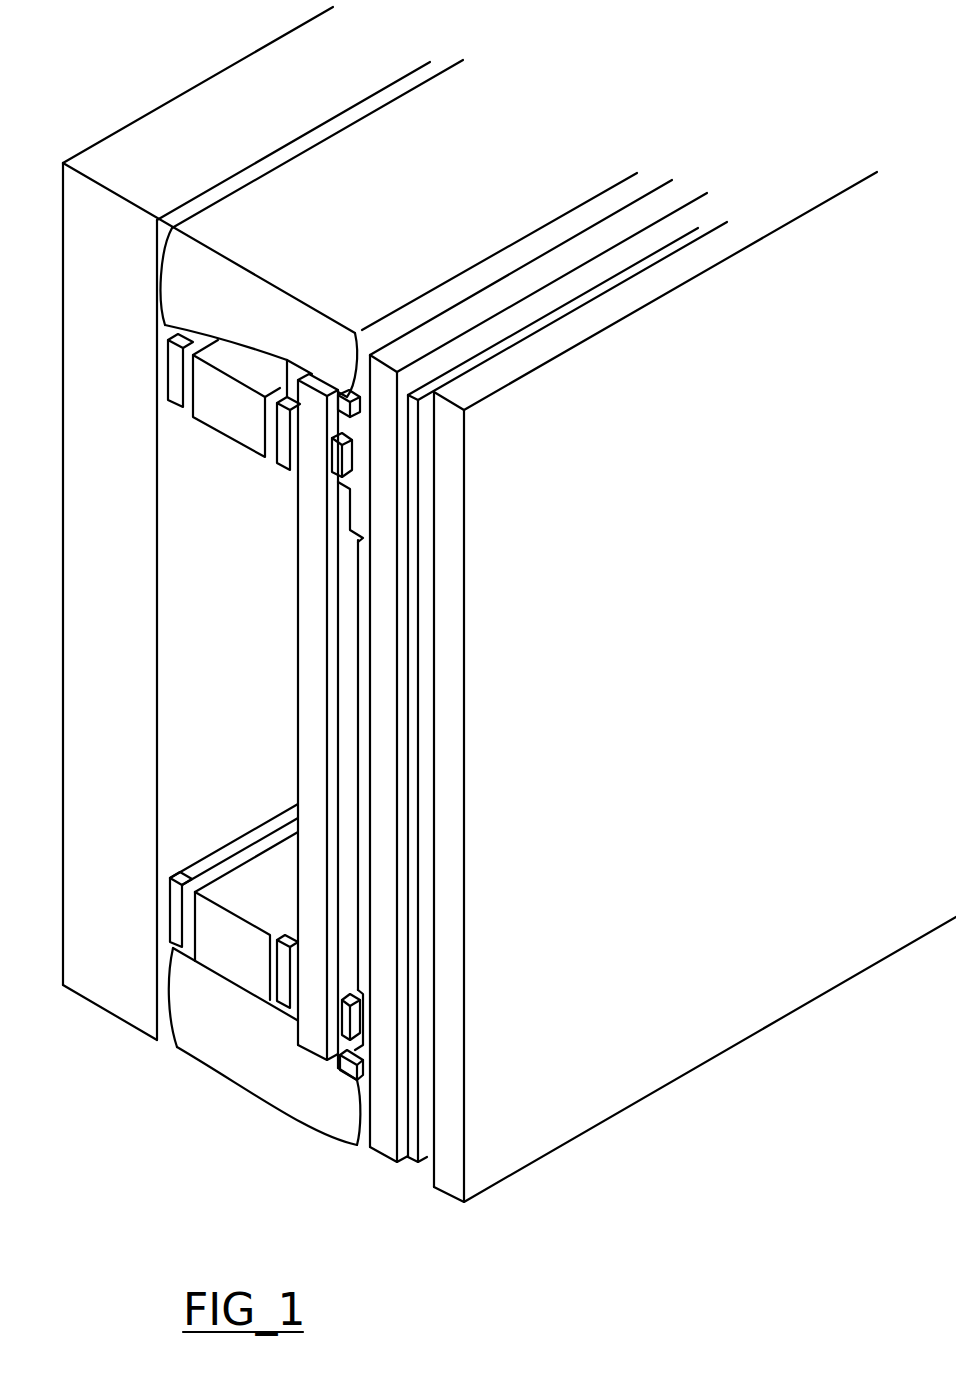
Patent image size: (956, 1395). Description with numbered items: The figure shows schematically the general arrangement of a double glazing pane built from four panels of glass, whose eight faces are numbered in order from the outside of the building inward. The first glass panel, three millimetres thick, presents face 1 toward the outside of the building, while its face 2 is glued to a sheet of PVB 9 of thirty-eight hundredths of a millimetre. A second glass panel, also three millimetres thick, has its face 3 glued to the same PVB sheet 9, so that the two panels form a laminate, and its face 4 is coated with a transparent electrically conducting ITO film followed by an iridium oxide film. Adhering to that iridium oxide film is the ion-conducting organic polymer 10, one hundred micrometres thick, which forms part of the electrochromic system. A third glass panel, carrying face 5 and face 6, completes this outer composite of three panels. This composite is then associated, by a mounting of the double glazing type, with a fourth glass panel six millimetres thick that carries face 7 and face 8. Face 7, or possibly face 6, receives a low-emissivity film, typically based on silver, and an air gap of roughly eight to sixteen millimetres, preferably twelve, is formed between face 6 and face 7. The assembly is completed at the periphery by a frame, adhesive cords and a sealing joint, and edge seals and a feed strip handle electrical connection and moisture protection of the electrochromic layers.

The face 1 is at (467, 512).
The face 2 is at (437, 528).
The face 3 is at (400, 548).
The face 4 is at (373, 567).
The face 5 is at (330, 588).
The face 6 is at (301, 610).
The face 7 is at (160, 632).
The face 8 is at (66, 652).
The sheet of PVB 9 is at (414, 763).
The ion-conducting organic polymer 10 is at (352, 866).